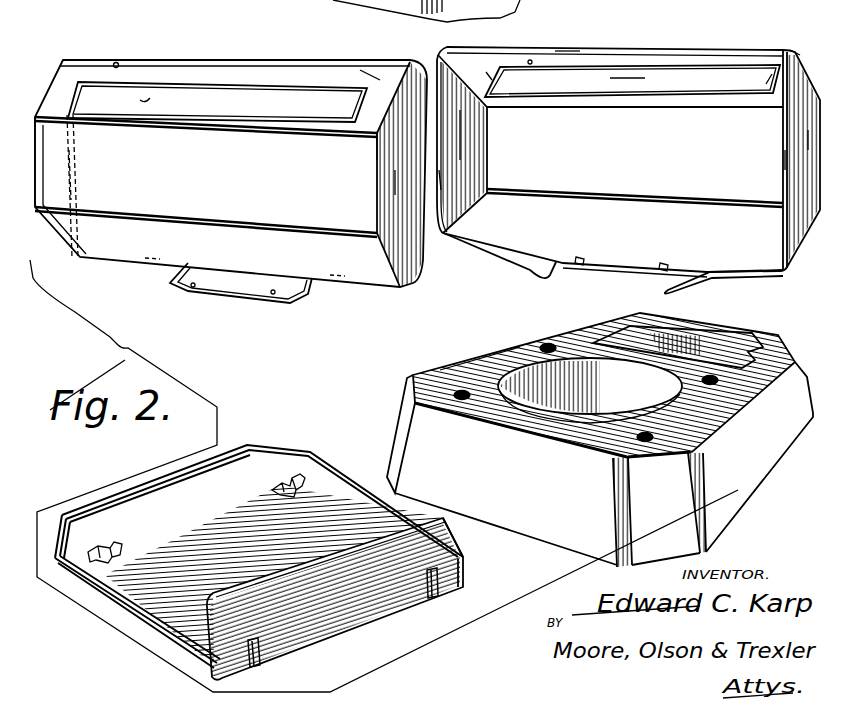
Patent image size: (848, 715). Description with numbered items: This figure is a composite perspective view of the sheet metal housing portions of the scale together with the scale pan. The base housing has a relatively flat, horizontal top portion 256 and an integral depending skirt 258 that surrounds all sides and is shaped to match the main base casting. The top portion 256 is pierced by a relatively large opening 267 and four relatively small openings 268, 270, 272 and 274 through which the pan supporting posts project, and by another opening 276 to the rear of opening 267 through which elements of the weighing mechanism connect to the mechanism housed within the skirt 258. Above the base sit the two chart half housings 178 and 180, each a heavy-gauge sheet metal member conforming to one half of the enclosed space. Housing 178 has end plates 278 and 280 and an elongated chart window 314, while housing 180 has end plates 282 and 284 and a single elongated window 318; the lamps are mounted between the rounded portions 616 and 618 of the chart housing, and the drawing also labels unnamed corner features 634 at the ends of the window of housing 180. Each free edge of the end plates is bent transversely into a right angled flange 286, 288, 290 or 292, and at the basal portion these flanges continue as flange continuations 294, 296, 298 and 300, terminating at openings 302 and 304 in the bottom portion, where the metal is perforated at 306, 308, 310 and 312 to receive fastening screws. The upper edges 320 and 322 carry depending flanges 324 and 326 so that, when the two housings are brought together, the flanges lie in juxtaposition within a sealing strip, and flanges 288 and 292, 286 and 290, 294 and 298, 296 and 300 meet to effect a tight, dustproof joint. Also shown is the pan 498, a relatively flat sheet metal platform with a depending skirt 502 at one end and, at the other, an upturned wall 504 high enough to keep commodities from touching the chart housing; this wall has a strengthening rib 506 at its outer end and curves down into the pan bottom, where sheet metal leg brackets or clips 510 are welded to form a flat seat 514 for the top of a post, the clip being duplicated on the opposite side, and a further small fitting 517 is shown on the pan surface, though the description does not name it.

The chart half housing 178 is at (248, 196).
The end plate 280 is at (45, 128).
The depending flange 324 is at (133, 46).
The elongated chart window 314 is at (143, 100).
The upper edge 320 is at (337, 62).
The rounded portion 616 is at (372, 75).
The right angled flange 288 is at (413, 144).
The end plate 278 is at (395, 181).
The flange continuation 296 is at (337, 275).
The flange continuation 294 is at (152, 258).
The right angled flange 286 is at (78, 178).
The perforation 306 is at (193, 285).
The opening 302 is at (187, 288).
The perforation 308 is at (273, 292).
The chart half housing 180 is at (593, 158).
The slot corner 634 is at (498, 68).
The depending flange 326 is at (530, 62).
The upper edge 322 is at (567, 50).
The elongated window 318 is at (627, 78).
The rounded portion 618 is at (807, 34).
The end plate 282 is at (467, 133).
The right angled flange 290 is at (447, 180).
The end plate 284 is at (807, 141).
The right angled flange 292 is at (790, 161).
The flange continuation 298 is at (517, 257).
The perforation 310 is at (580, 257).
The opening 304 is at (620, 263).
The perforation 312 is at (663, 263).
The flange continuation 300 is at (713, 270).
The depending skirt 258 is at (738, 490).
The small opening 270 is at (552, 345).
The opening 276 is at (700, 343).
The top portion 256 is at (482, 360).
The small opening 268 is at (460, 390).
The large opening 267 is at (563, 390).
The small opening 274 is at (713, 377).
The small opening 272 is at (643, 433).
The pan 498 is at (285, 564).
The depending skirt 502 is at (55, 510).
The upturned wall 504 is at (343, 605).
The strengthening rib 506 is at (460, 554).
The leg bracket clip 510 is at (260, 663).
The flat seat 514 is at (270, 488).
The clip 517 is at (123, 554).